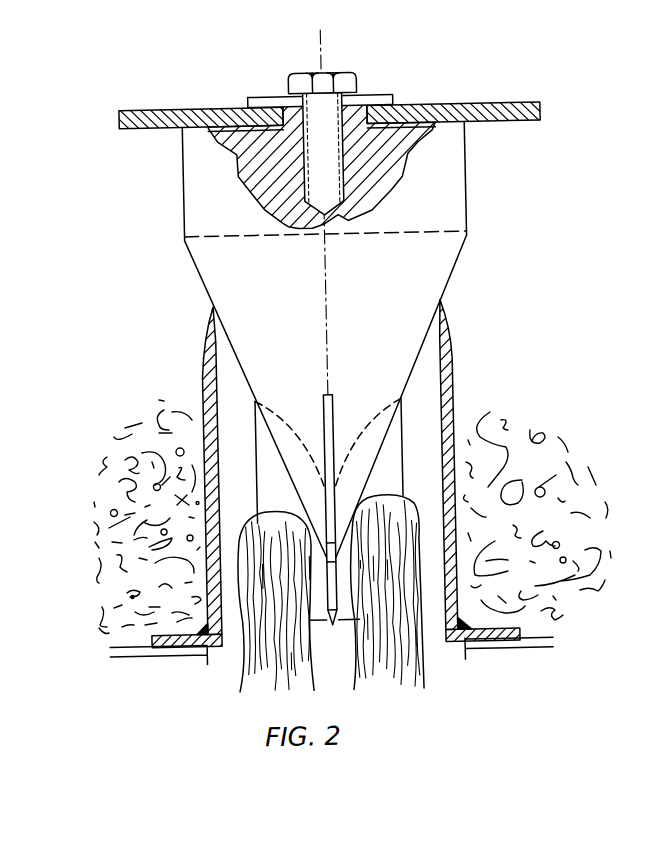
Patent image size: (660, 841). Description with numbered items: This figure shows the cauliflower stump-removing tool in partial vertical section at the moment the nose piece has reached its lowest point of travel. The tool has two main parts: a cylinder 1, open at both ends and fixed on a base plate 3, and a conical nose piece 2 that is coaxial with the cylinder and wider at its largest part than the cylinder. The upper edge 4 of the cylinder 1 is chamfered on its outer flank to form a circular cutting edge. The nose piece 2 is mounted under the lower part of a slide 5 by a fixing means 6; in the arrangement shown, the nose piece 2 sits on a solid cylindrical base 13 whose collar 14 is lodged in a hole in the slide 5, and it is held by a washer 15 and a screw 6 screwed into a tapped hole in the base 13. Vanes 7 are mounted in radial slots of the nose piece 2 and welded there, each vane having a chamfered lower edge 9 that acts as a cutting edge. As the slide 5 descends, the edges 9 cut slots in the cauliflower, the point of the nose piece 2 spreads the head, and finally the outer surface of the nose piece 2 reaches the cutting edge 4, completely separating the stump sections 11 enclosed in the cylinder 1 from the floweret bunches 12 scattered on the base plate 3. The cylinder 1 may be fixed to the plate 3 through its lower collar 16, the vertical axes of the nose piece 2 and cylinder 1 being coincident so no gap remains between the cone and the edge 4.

The cylinder 1 is at (217, 503).
The conical nose piece 2 is at (449, 265).
The base plate 3 is at (128, 653).
The upper edge 4 is at (447, 341).
The slide 5 is at (192, 114).
The fixing means 6 is at (344, 74).
The vanes 7 is at (399, 469).
The lower edge 9 is at (342, 610).
The stump 11 is at (419, 512).
The floweret sections 12 is at (131, 432).
The solid cylindrical base 13 is at (470, 171).
The collar 14 is at (239, 173).
The washer 15 is at (384, 98).
The lower collar 16 is at (185, 635).